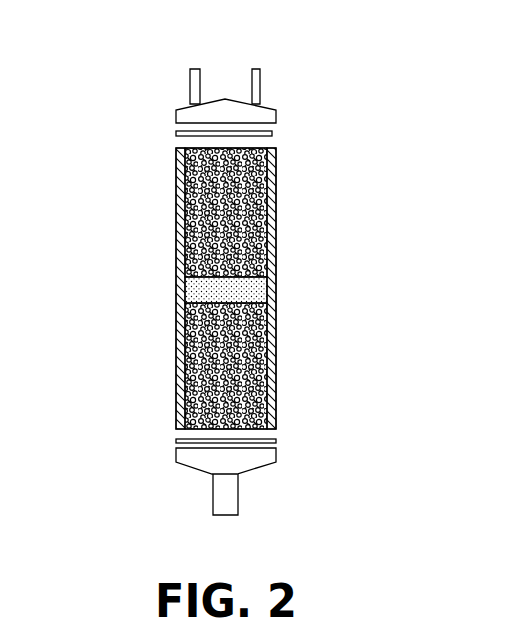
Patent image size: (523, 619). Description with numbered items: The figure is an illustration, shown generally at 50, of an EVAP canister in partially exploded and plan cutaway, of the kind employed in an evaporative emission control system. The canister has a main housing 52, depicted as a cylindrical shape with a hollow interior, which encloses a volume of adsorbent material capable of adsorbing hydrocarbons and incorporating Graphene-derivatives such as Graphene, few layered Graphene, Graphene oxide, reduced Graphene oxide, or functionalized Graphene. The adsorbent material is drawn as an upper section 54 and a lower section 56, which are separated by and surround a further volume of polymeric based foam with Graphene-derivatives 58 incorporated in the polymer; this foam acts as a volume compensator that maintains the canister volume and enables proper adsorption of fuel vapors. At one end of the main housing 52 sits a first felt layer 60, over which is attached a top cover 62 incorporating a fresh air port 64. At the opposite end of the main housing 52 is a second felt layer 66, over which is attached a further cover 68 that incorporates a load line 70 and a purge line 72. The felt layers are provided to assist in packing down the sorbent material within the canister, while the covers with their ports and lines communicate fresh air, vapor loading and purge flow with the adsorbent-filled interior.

The EVAP canister illustration 50 is at (113, 212).
The main housing 52 is at (178, 333).
The upper adsorbent section 54 is at (195, 197).
The lower adsorbent section 56 is at (195, 385).
The polymeric based foam with Graphene-derivatives 58 is at (192, 293).
The first felt layer 60 is at (177, 441).
The top cover 62 is at (276, 455).
The fresh air port 64 is at (226, 515).
The second felt layer 66 is at (272, 135).
The further cover 68 is at (178, 118).
The load line 70 is at (193, 67).
The purge line 72 is at (255, 67).